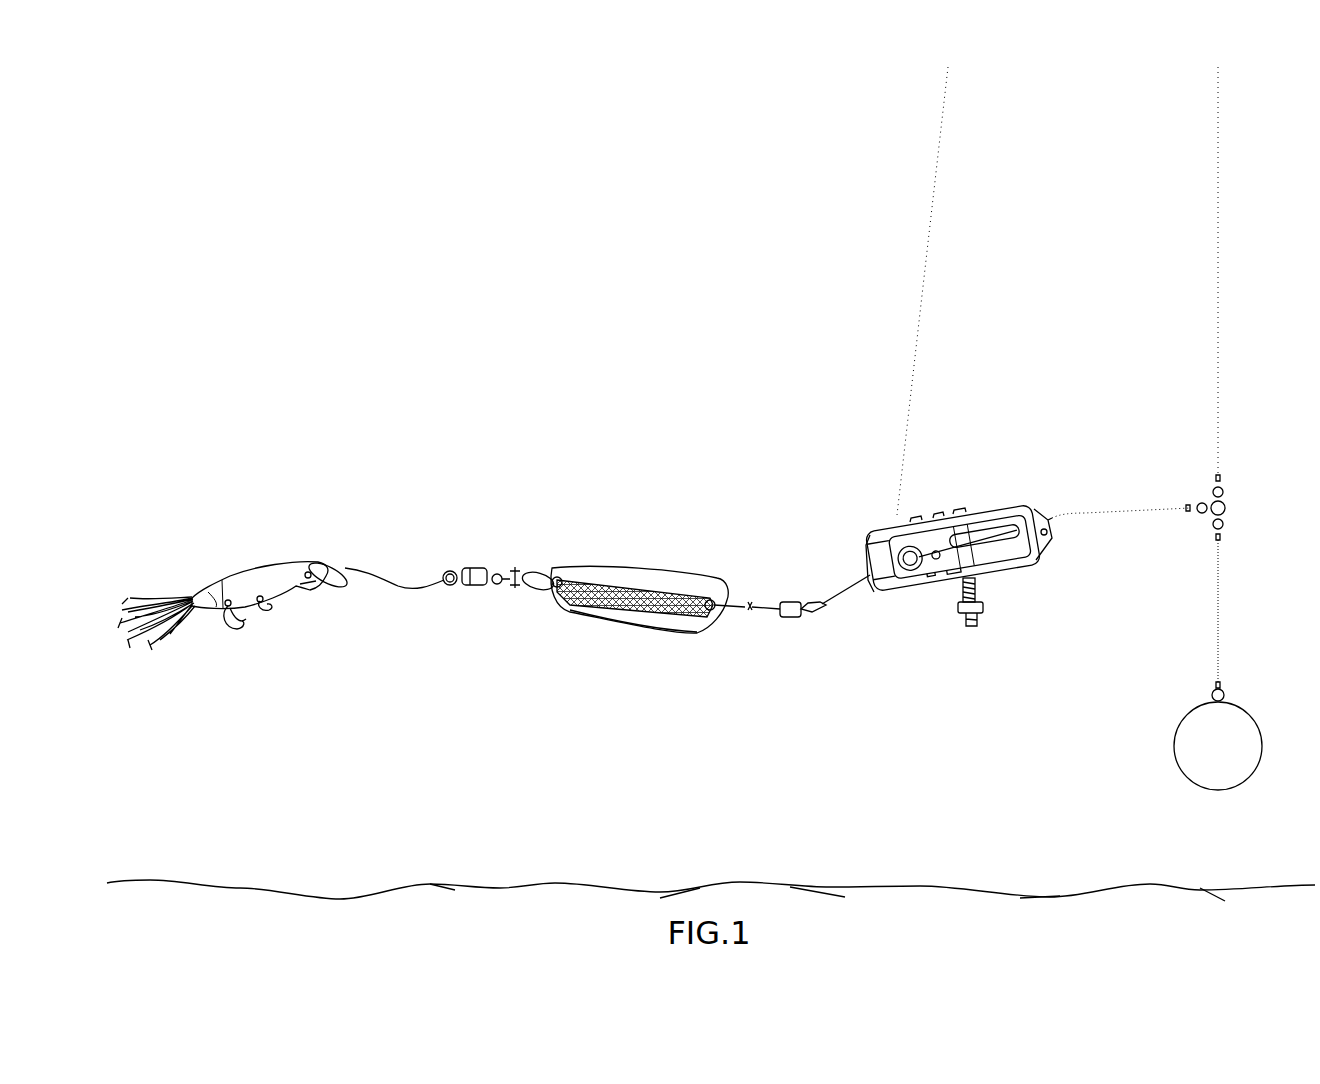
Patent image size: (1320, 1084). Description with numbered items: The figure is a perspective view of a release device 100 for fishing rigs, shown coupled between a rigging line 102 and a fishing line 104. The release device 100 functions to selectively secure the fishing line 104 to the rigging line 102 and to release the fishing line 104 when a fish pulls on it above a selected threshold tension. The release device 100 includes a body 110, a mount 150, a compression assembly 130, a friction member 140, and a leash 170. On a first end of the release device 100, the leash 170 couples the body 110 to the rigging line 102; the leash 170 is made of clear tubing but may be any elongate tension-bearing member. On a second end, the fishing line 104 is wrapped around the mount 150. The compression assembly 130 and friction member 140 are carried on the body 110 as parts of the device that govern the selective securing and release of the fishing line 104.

The release device 100 is at (1016, 577).
The rigging line 102 is at (1218, 288).
The fishing line 104 is at (921, 278).
The body 110 is at (1072, 570).
The compression assembly 130 is at (971, 627).
The friction member 140 is at (922, 502).
The mount 150 is at (857, 561).
The leash 170 is at (1175, 507).